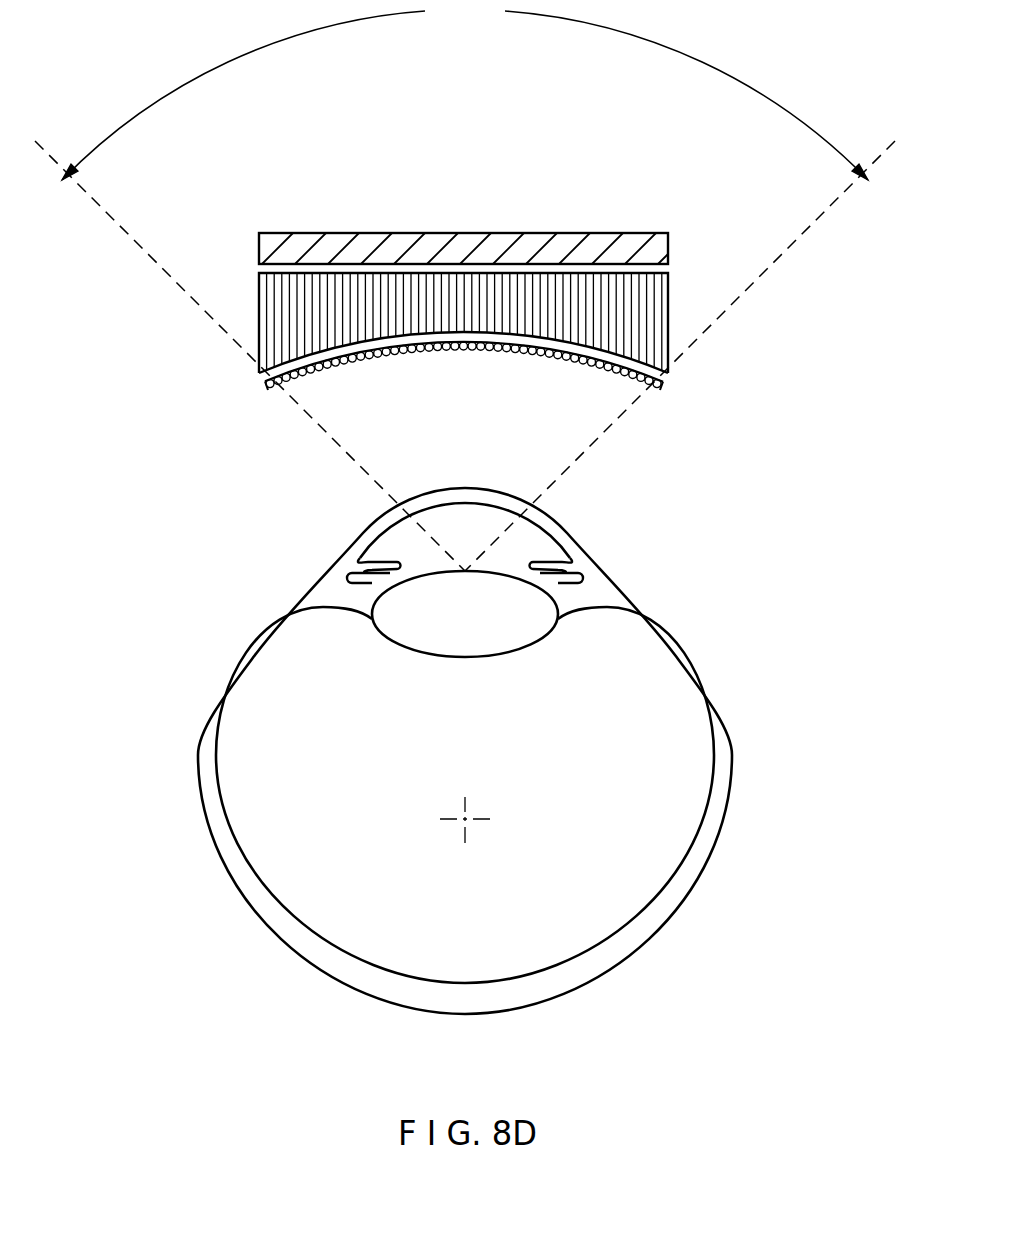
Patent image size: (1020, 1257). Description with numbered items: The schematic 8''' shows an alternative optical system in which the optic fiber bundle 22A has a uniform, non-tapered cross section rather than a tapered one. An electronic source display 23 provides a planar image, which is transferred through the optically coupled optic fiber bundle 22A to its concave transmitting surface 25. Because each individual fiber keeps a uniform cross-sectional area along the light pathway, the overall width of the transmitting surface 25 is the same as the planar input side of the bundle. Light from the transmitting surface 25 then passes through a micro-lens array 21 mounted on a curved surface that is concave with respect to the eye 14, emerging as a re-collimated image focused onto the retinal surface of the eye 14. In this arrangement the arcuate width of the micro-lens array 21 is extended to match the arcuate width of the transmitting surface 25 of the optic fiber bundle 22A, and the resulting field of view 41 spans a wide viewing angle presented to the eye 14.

The right field of view 41 is at (465, 93).
The electronic source display 23 is at (611, 242).
The optic fiber bundle 22A is at (647, 303).
The micro-lens array 21 is at (605, 373).
The transmitting surface 25 is at (662, 378).
The eye 14 is at (612, 558).
The schematic 8''' is at (771, 952).